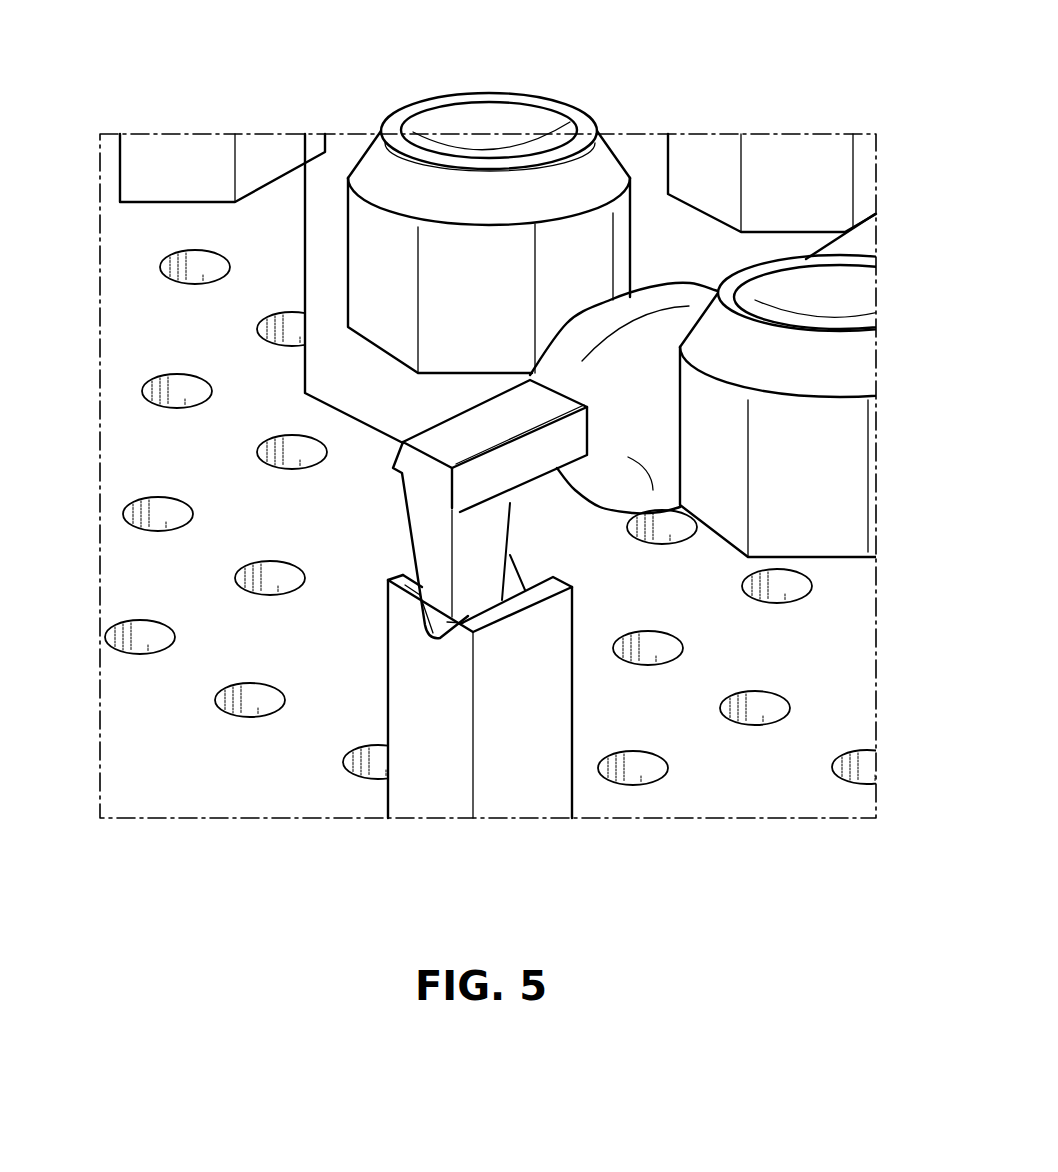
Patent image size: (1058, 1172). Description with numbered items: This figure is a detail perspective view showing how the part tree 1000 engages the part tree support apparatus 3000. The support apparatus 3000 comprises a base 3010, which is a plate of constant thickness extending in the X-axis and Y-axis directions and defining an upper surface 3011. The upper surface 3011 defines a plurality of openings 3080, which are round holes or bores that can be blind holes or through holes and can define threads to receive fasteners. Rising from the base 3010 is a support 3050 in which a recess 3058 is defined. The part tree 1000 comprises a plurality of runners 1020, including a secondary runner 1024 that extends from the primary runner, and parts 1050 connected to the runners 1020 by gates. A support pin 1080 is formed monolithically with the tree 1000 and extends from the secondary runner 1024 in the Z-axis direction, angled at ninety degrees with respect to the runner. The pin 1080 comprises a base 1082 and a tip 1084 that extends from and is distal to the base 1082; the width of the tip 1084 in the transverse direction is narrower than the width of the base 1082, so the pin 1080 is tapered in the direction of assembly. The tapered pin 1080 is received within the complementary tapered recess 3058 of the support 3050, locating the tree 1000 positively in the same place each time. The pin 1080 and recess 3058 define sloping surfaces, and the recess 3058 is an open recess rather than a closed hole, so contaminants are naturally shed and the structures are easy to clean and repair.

The part tree 1000 is at (652, 298).
The parts 1050 is at (848, 433).
The runners 1020 is at (617, 453).
The secondary runner 1024 is at (517, 467).
The support pin 1080 is at (393, 551).
The base 1082 is at (401, 582).
The tip 1084 is at (443, 600).
The part tree support apparatus 3000 is at (472, 473).
The base 3010 is at (117, 228).
The upper surface 3011 is at (160, 770).
The support 3050 is at (436, 730).
The recess 3058 is at (413, 603).
The openings 3080 is at (653, 773).